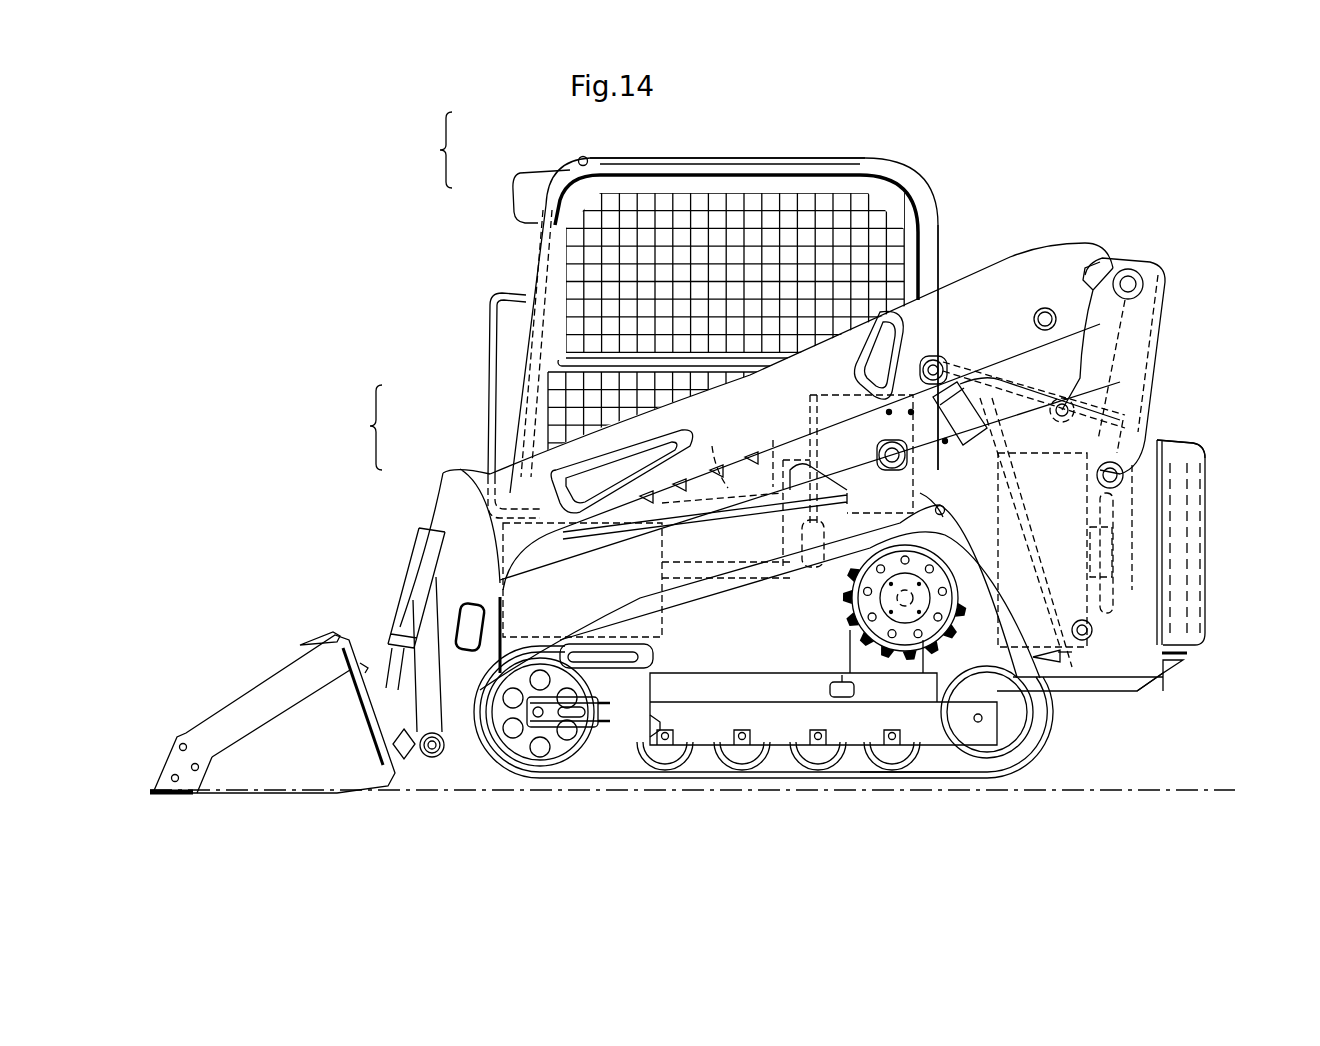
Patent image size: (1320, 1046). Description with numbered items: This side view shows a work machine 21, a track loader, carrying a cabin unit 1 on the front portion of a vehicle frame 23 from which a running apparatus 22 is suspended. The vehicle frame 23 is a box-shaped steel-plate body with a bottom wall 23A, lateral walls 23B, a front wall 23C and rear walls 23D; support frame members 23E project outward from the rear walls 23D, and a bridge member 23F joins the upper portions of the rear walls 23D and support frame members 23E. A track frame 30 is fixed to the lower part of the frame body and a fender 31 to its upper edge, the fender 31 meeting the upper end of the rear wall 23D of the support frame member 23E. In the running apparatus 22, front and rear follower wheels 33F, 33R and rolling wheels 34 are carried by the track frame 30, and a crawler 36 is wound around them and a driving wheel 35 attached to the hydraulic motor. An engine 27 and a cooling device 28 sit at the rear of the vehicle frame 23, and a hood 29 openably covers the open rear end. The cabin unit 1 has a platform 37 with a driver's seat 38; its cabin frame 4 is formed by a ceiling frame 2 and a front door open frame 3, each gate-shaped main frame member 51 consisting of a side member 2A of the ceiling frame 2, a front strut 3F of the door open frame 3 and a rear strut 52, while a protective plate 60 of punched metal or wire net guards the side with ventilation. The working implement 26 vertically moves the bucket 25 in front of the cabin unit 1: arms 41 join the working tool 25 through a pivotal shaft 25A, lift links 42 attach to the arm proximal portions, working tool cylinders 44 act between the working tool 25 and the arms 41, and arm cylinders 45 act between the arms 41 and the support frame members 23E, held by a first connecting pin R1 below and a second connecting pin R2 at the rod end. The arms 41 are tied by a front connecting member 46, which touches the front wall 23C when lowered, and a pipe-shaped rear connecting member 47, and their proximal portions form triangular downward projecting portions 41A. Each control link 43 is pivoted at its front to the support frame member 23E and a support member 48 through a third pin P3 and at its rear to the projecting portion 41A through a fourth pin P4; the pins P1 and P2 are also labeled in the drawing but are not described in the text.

The cabin unit 1 is at (494, 250).
The top ceiling frame 2 is at (568, 152).
The side member 2A is at (745, 152).
The front door open frame 3 is at (516, 234).
The front strut 3F is at (525, 293).
The cabin frame 4 is at (435, 150).
The work machine 21 is at (412, 332).
The running apparatus 22 is at (1046, 760).
The vehicle frame 23 is at (1155, 748).
The bottom wall 23A is at (1053, 680).
The lateral wall 23B is at (547, 593).
The front wall 23C is at (460, 470).
The rear wall 23D is at (835, 556).
The support frame member 23E is at (1150, 680).
The bridge member 23F is at (815, 403).
The working tool (bucket) 25 is at (265, 648).
The pivotal shaft 25A is at (434, 760).
The working implement 26 is at (412, 513).
The engine 27 is at (1068, 655).
The cooling device 28 is at (1182, 456).
The hood 29 is at (1172, 438).
The track frame 30 is at (690, 735).
The fender 31 is at (613, 536).
The front follower wheel 33F is at (540, 766).
The rear follower wheel 33R is at (985, 758).
The rolling wheel 34 is at (805, 768).
The driving wheel 35 is at (895, 660).
The crawler 36 is at (905, 780).
The platform 37 is at (662, 630).
The driver's seat 38 is at (722, 462).
The arm 41 is at (1079, 247).
The projecting portion 41A is at (1073, 375).
The lift link 42 is at (1145, 320).
The control link 43 is at (1000, 460).
The working tool cylinder 44 is at (445, 553).
The arm cylinder 45 is at (1093, 533).
The front connecting member 46 is at (470, 670).
The rear connecting member 47 is at (1045, 307).
The support member 48 is at (877, 472).
The main frame member 51 is at (878, 148).
The rear strut 52 is at (935, 240).
The protective plate 60 is at (810, 178).
The pivot point P1 is at (1128, 482).
The pivot point P2 is at (1140, 270).
The third pin P3 is at (905, 462).
The fourth pin P4 is at (1062, 425).
The first connecting pin R1 is at (1095, 630).
The second connecting pin R2 is at (937, 360).